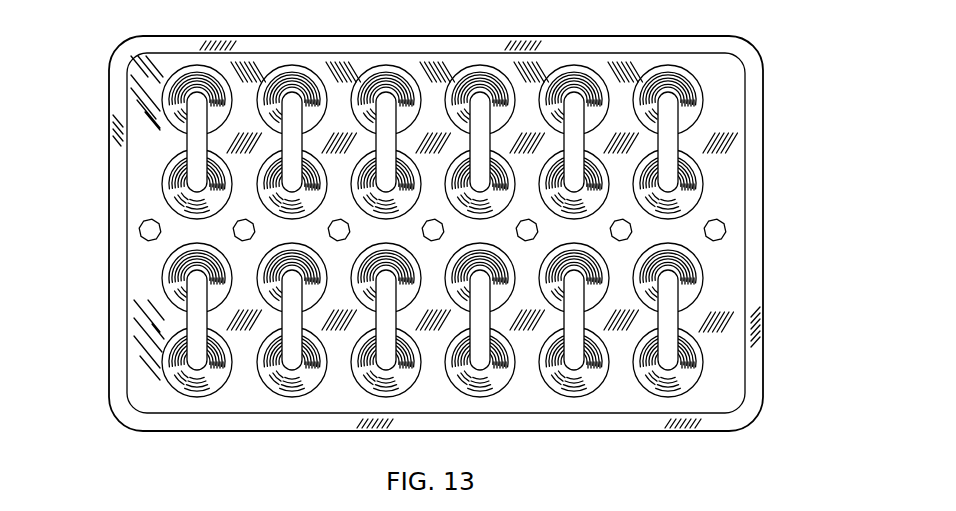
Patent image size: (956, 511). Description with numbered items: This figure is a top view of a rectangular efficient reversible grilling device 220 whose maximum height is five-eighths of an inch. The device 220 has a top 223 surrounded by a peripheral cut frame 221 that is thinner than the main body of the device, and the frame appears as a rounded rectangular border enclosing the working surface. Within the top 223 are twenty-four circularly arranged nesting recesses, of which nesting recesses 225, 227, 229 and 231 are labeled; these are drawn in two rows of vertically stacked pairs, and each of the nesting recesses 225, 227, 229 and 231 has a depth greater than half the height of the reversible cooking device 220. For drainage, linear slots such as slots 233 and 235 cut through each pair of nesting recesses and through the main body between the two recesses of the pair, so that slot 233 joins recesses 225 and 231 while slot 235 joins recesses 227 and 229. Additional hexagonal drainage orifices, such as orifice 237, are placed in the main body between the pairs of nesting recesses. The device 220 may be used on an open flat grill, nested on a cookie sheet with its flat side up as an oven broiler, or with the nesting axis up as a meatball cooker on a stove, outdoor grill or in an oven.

The reversible grilling device 220 is at (427, 226).
The peripheral cut frame 221 is at (113, 222).
The top 223 is at (140, 388).
The nesting recess 225 is at (175, 96).
The nesting recess 227 is at (688, 92).
The nesting recess 229 is at (682, 200).
The nesting recess 231 is at (175, 186).
The linear slot 233 is at (196, 142).
The linear slot 235 is at (668, 143).
The hexagonal drainage orifice 237 is at (722, 234).